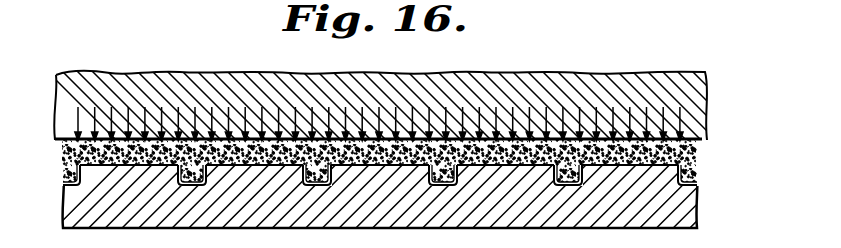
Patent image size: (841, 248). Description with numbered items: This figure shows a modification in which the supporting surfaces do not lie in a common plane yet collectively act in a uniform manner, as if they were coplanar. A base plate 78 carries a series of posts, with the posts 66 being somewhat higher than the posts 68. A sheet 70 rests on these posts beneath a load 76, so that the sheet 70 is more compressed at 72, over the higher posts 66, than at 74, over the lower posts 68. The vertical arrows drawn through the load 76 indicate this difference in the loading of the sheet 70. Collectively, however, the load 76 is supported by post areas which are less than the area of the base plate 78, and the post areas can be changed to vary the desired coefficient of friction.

The posts 66 is at (140, 173).
The posts 68 is at (259, 178).
The sheet 70 is at (695, 151).
The more compressed region of sheet 72 is at (121, 161).
The less compressed region of sheet 74 is at (238, 143).
The load 76 is at (690, 83).
The base plate 78 is at (668, 203).